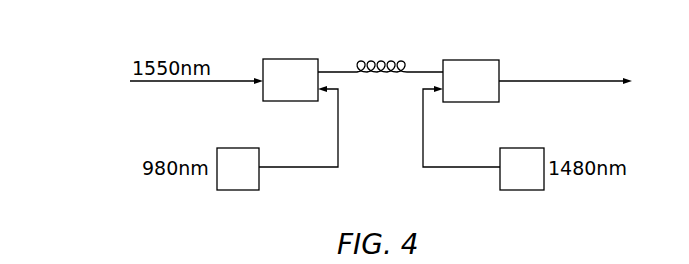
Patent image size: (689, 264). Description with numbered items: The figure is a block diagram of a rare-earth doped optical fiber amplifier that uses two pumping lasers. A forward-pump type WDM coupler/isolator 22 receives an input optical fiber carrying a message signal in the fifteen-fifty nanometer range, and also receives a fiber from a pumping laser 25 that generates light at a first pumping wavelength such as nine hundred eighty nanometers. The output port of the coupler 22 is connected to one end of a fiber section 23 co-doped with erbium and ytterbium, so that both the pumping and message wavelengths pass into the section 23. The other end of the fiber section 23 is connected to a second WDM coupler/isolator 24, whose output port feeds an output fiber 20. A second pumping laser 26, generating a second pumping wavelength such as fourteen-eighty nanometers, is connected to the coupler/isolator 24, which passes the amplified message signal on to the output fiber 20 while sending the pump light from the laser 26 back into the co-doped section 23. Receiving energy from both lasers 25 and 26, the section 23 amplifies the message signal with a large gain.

The output fiber 20 is at (583, 80).
The WDM coupler/isolator 22 is at (292, 59).
The fiber section 23 is at (386, 61).
The second WDM coupler/isolator 24 is at (476, 60).
The pumping laser 25 is at (237, 148).
The second pumping laser 26 is at (525, 148).